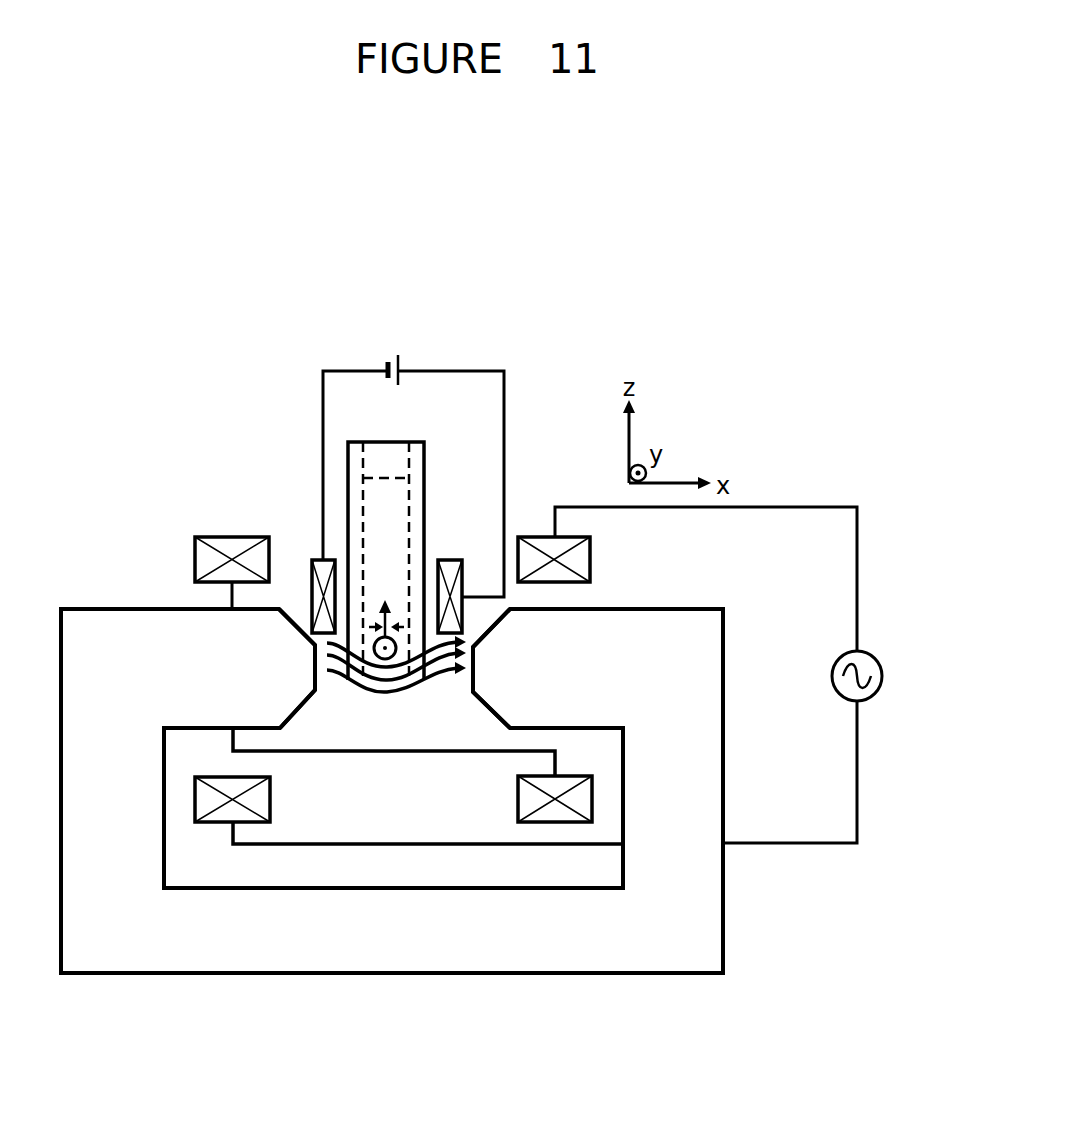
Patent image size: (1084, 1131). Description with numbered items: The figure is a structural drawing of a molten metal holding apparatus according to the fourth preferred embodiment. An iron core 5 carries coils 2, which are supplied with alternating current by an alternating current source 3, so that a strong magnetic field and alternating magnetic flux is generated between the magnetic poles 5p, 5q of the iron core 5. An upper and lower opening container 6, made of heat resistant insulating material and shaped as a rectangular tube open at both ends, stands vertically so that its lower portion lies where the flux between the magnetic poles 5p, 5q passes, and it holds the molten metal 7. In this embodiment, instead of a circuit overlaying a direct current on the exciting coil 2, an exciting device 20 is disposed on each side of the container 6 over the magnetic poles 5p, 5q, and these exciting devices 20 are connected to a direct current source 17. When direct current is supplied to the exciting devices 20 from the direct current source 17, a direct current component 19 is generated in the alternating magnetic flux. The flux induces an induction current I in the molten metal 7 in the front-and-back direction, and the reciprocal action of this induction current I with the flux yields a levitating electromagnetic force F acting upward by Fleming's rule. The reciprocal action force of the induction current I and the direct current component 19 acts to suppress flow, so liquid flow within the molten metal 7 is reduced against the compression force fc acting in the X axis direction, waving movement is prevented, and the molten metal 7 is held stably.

The coil 2 is at (234, 545).
The alternating current source 3 is at (866, 660).
The iron core 5 is at (716, 870).
The magnetic pole 5p is at (295, 668).
The magnetic pole 5q is at (495, 668).
The upper and lower opening container 6 is at (415, 445).
The molten metal 7 is at (395, 492).
The direct current source 17 is at (400, 362).
The direct current component 19 is at (393, 660).
The exciting device 20 is at (333, 625).
The induction current I is at (385, 634).
The levitating electromagnetic force F is at (397, 626).
The compression force fc is at (388, 603).